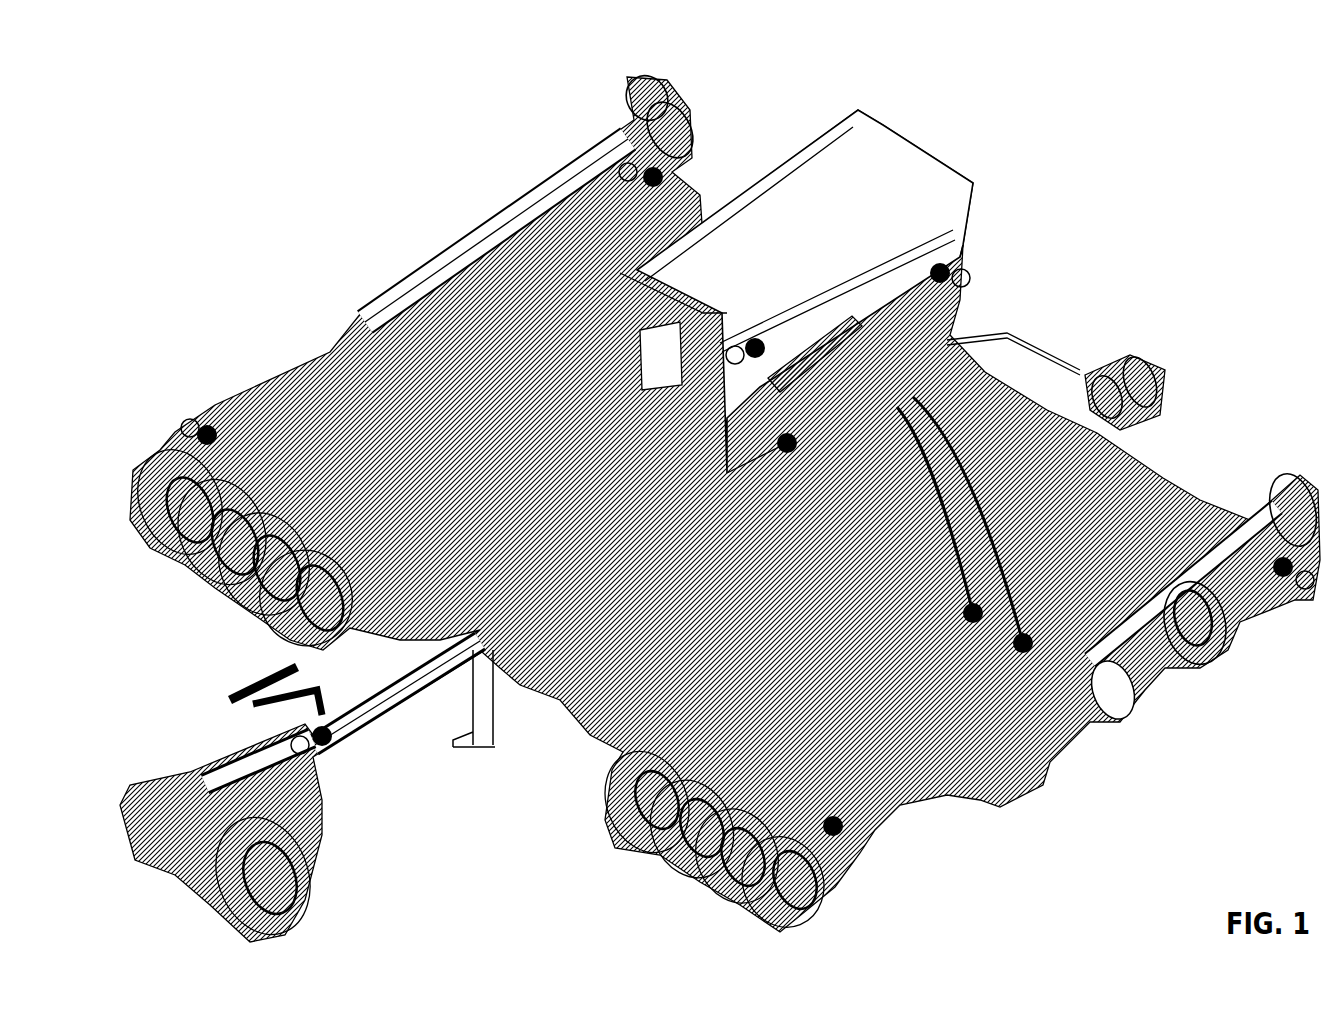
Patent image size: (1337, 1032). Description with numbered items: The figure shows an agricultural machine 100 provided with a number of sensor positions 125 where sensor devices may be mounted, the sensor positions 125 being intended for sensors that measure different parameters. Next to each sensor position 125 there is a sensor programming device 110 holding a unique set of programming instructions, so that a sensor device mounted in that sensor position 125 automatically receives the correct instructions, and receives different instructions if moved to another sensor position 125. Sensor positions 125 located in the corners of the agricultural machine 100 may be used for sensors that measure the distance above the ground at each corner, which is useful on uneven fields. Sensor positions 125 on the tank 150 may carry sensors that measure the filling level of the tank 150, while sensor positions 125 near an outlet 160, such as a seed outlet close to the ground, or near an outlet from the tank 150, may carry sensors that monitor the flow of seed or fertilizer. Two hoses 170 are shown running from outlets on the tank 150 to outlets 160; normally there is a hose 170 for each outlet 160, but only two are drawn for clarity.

The agricultural machine 100 is at (383, 115).
The sensor programming device 110 is at (215, 420).
The sensor position 125 is at (190, 420).
The tank 150 is at (916, 128).
The outlet 160 is at (1073, 712).
The hose 170 is at (965, 340).